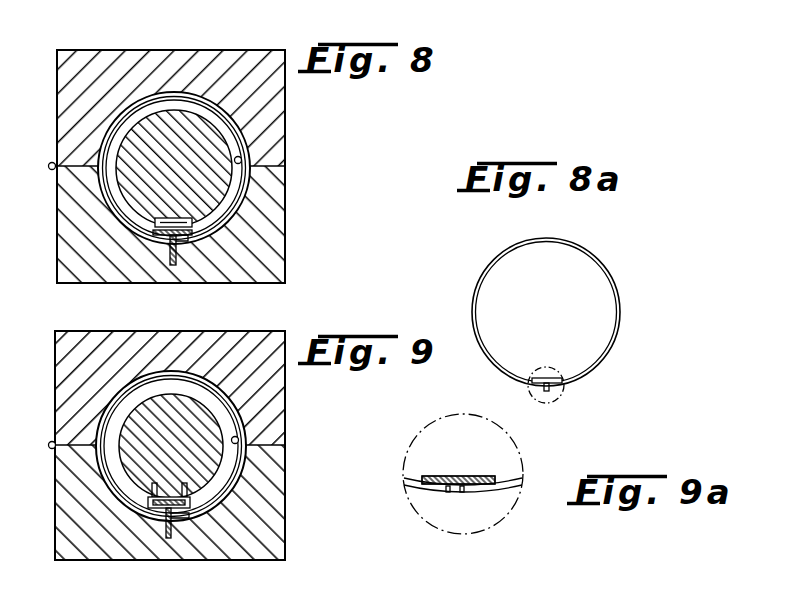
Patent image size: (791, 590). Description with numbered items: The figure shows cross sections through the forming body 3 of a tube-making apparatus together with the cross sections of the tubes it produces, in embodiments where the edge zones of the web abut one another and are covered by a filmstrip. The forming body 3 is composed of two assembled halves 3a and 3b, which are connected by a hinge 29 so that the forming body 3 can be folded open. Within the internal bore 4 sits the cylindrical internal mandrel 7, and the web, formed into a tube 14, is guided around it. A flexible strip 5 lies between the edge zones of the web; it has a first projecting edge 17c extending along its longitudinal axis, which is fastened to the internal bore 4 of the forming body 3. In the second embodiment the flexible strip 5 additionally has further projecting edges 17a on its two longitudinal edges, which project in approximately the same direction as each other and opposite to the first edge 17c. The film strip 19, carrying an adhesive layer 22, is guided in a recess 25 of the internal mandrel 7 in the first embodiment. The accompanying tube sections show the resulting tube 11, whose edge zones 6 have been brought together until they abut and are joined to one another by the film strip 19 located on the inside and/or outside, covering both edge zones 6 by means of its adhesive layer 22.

In FIG. 8, the forming body 3 is at (264, 48).
In FIG. 9, the forming body 3 is at (276, 330).
In FIG. 8, the body half 3a is at (142, 62).
In FIG. 9, the body half 3a is at (270, 390).
In FIG. 8, the body half 3b is at (280, 262).
In FIG. 9, the body half 3b is at (272, 540).
In FIG. 8, the internal bore 4 is at (242, 158).
In FIG. 9, the internal bore 4 is at (239, 438).
In FIG. 8, the flexible strip 5 is at (186, 242).
In FIG. 9, the flexible strip 5 is at (180, 515).
In FIG. 8a, the edge zones 6 is at (548, 392).
In FIG. 9a, the edge zones 6 is at (449, 492).
In FIG. 8, the internal mandrel 7 is at (212, 150).
In FIG. 9, the internal mandrel 7 is at (200, 416).
In FIG. 8a, the tube 11 is at (513, 252).
In FIG. 9a, the tube 11 is at (505, 484).
In FIG. 8, the tube 14 is at (213, 98).
In FIG. 9, the tube 14 is at (127, 385).
In FIG. 9, the projecting edge 17a is at (152, 492).
In FIG. 8, the first projecting edge 17c is at (168, 240).
In FIG. 9, the first projecting edge 17c is at (168, 540).
In FIG. 8, the film strip 19 is at (251, 213).
In FIG. 9, the film strip 19 is at (248, 502).
In FIG. 8a, the film strip 19 is at (552, 360).
In FIG. 9a, the film strip 19 is at (437, 475).
In FIG. 8, the adhesive layer 22 is at (172, 232).
In FIG. 9, the adhesive layer 22 is at (190, 506).
In FIG. 8a, the adhesive layer 22 is at (541, 376).
In FIG. 9a, the adhesive layer 22 is at (478, 476).
In FIG. 8, the recess 25 is at (160, 209).
In FIG. 8, the hinge 29 is at (50, 163).
In FIG. 9, the hinge 29 is at (50, 448).